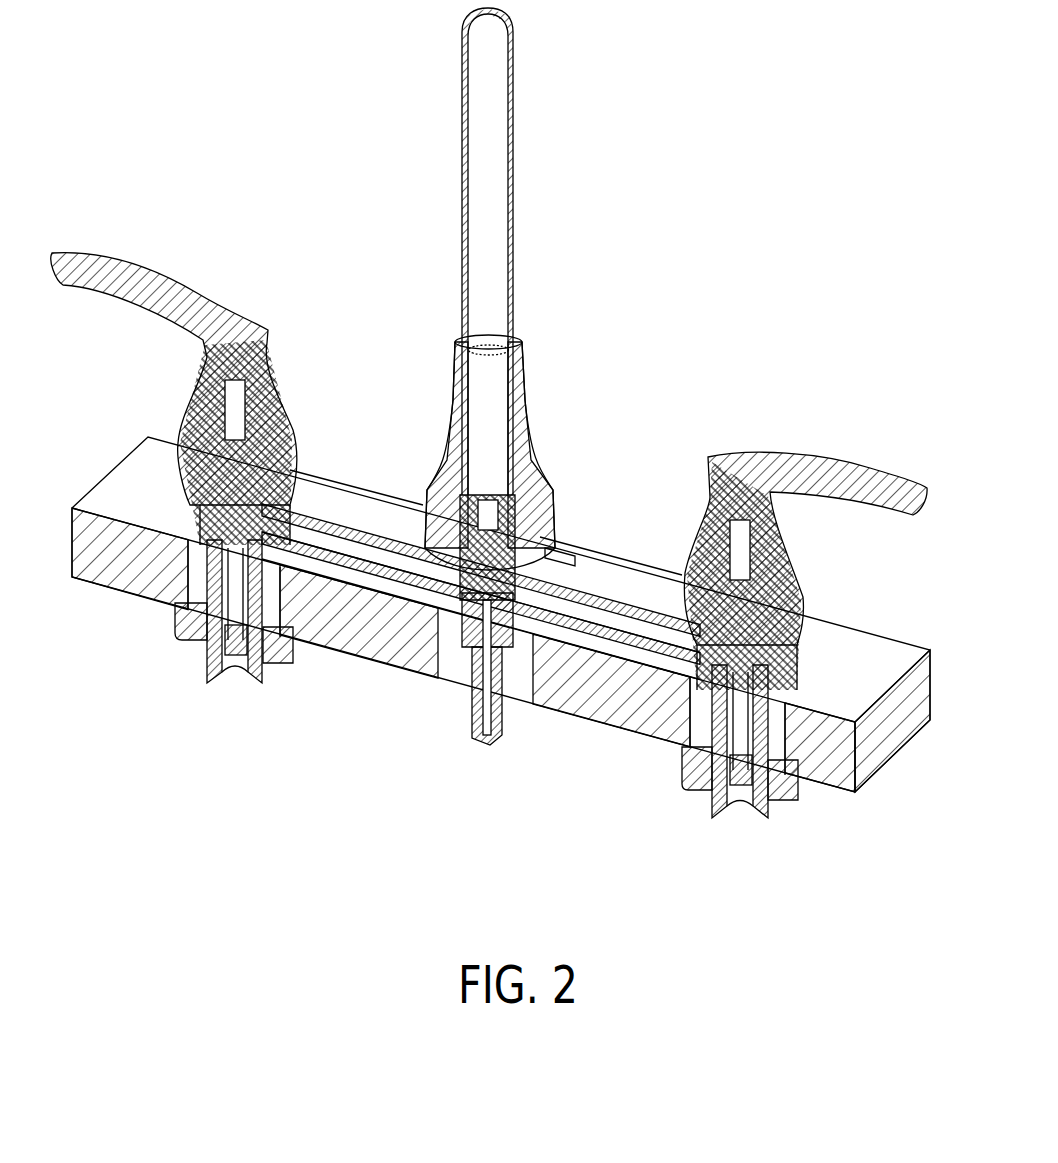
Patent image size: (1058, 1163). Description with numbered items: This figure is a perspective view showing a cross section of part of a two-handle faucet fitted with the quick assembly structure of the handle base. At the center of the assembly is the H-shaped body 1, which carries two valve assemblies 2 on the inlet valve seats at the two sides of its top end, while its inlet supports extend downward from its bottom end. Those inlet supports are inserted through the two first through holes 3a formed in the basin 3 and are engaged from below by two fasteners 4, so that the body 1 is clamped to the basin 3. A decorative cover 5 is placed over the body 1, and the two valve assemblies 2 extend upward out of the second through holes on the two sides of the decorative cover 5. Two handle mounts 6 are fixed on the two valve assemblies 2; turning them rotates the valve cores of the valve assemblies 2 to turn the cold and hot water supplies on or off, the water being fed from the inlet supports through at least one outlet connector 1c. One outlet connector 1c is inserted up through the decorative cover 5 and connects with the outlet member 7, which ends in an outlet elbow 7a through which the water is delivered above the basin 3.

The body 1 is at (612, 638).
The outlet connector 1c is at (545, 560).
The valve assembly 2 is at (250, 440).
The basin 3 is at (130, 468).
The first through hole 3a is at (193, 562).
The fastener 4 is at (273, 665).
The decorative cover 5 is at (345, 495).
The handle mount 6 is at (203, 290).
The outlet member 7 is at (527, 427).
The outlet elbow 7a is at (513, 185).